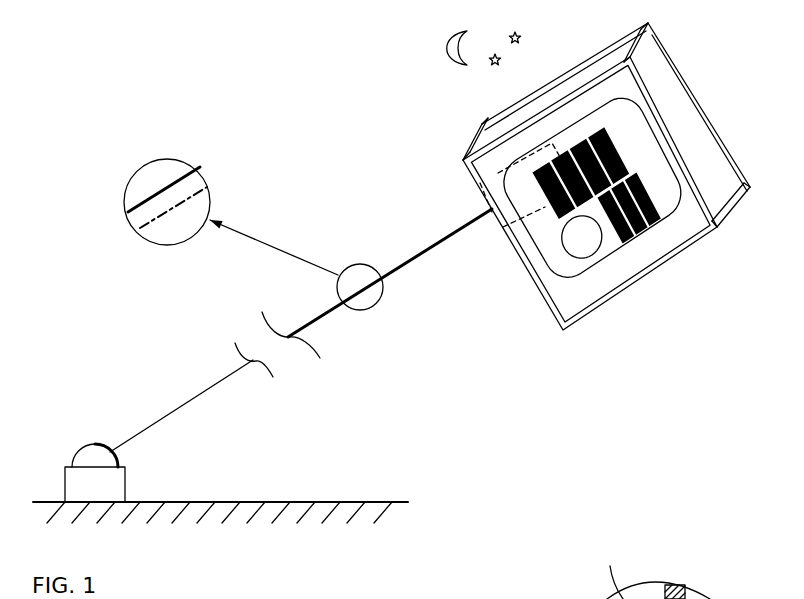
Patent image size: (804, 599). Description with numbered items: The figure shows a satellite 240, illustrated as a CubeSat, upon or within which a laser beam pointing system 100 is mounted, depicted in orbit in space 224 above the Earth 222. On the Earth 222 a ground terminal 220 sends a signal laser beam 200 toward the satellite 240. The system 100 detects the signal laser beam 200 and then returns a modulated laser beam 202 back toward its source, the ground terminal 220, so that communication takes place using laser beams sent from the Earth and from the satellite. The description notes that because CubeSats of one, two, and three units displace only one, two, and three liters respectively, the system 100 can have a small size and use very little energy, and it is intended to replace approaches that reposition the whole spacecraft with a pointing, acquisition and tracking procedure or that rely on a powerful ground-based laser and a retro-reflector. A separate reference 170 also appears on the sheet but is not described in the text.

The system 100 is at (491, 172).
The signal laser beam 200 is at (153, 190).
The modulated laser beam 202 is at (172, 219).
The ground terminal 220 is at (115, 480).
The Earth 222 is at (247, 508).
The space 224 is at (420, 58).
The satellite 240 is at (578, 300).
The conduit 170 is at (712, 598).